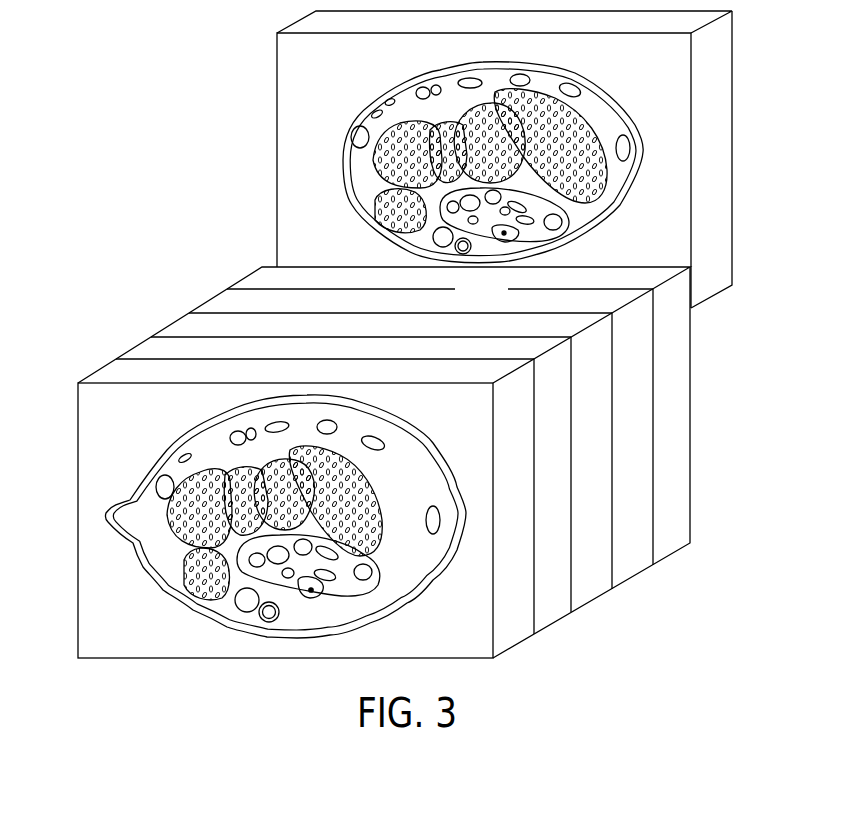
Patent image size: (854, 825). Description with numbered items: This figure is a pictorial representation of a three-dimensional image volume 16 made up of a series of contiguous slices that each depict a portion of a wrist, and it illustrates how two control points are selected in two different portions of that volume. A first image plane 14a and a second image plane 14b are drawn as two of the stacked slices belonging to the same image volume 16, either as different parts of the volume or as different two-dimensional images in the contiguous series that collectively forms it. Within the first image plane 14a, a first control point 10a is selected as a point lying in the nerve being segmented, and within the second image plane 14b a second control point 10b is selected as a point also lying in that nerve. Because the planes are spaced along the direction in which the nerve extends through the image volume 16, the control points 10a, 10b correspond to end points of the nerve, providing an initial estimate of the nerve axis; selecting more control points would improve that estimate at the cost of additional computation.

The first control point 10a is at (312, 604).
The second control point 10b is at (495, 247).
The first image plane 14a is at (78, 408).
The second image plane 14b is at (277, 79).
The image volume 16 is at (179, 256).